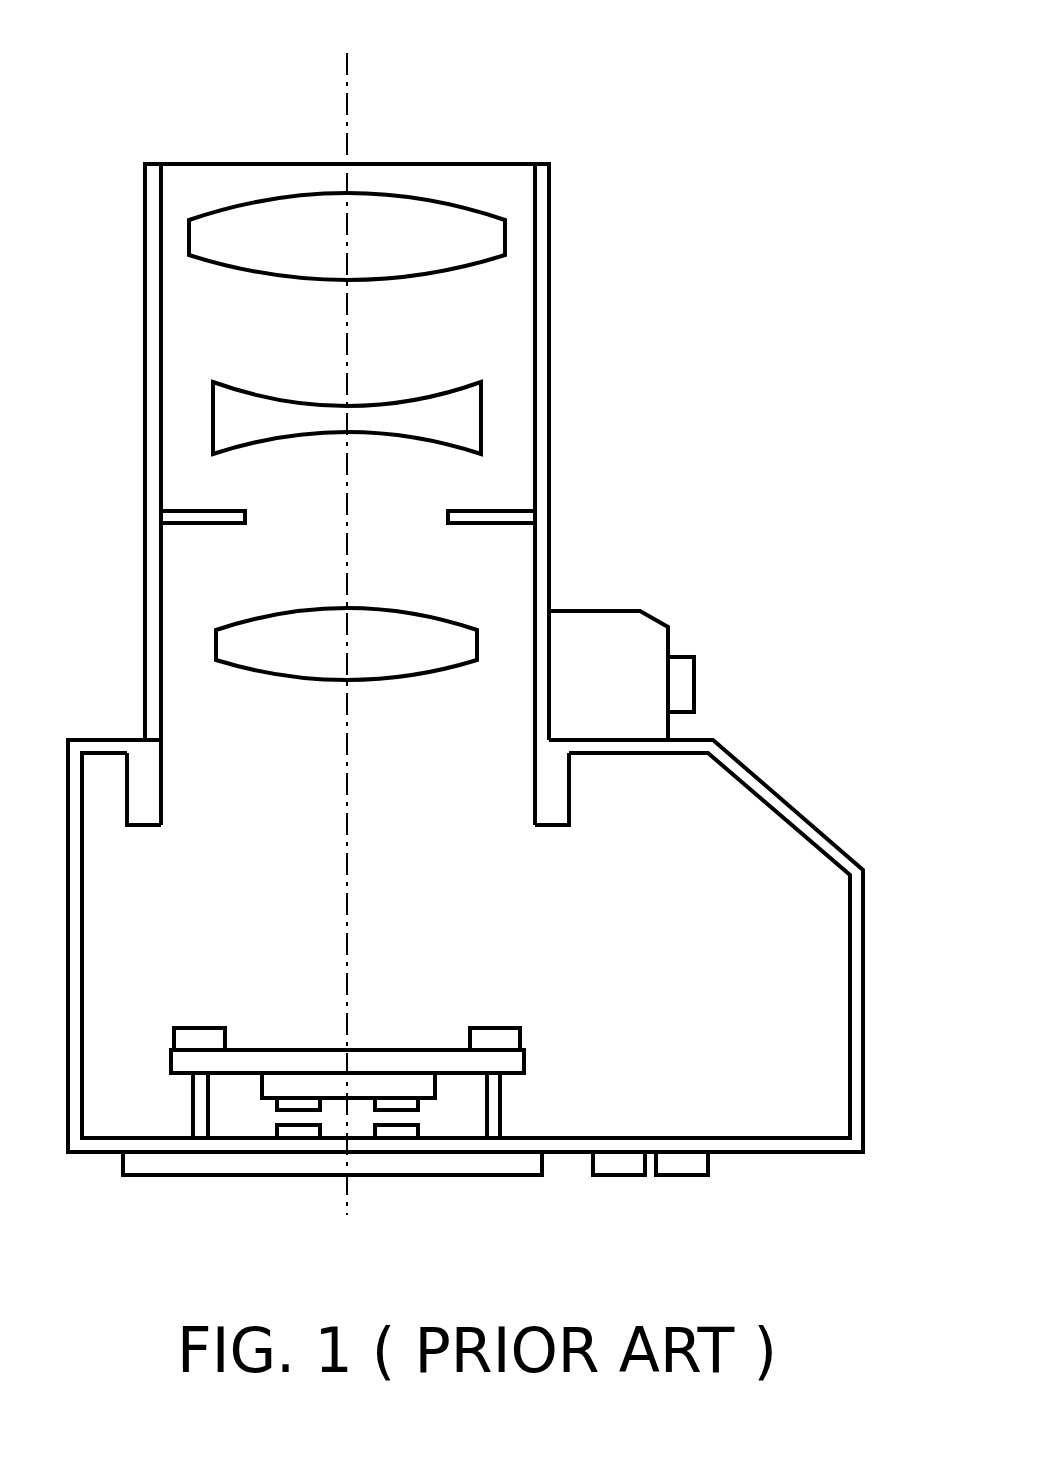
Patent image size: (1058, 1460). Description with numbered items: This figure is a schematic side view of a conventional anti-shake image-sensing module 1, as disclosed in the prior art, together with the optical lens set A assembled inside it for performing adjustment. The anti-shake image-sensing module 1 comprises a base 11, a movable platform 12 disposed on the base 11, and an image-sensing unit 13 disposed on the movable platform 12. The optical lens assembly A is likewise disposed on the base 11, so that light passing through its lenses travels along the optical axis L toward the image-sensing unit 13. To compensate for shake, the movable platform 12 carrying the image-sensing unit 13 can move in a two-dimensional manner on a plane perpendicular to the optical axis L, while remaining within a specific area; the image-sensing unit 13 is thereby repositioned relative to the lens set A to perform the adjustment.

The anti-shake image-sensing module 1 is at (807, 778).
The base 11 is at (605, 1145).
The movable platform 12 is at (508, 1040).
The image-sensing unit 13 is at (407, 1062).
The optical lens set A is at (457, 172).
The optical axis L is at (344, 611).